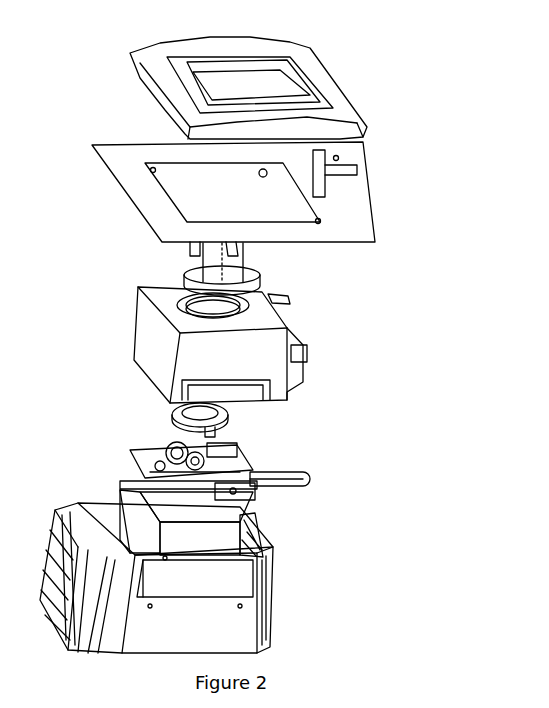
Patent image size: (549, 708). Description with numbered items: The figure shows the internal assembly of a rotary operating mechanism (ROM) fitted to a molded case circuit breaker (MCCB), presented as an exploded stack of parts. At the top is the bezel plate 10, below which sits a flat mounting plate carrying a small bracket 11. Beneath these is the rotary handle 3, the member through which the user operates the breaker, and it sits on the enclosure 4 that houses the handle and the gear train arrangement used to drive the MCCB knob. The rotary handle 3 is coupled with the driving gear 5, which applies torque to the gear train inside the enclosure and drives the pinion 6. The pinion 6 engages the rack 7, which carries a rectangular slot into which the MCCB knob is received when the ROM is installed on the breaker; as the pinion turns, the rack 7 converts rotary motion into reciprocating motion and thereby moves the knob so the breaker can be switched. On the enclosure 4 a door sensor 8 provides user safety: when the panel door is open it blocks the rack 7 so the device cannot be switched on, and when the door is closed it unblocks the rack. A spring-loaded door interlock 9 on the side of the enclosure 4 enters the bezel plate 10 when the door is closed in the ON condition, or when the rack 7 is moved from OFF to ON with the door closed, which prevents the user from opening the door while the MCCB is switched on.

The bezel plate 10 is at (357, 88).
The mounting bracket 11 is at (350, 170).
The rotary handle 3 is at (262, 275).
The enclosure 4 is at (137, 353).
The door sensor 8 is at (284, 302).
The door interlock 9 is at (300, 351).
The driving gear 5 is at (240, 420).
The pinion 6 is at (130, 457).
The rack 7 is at (260, 470).